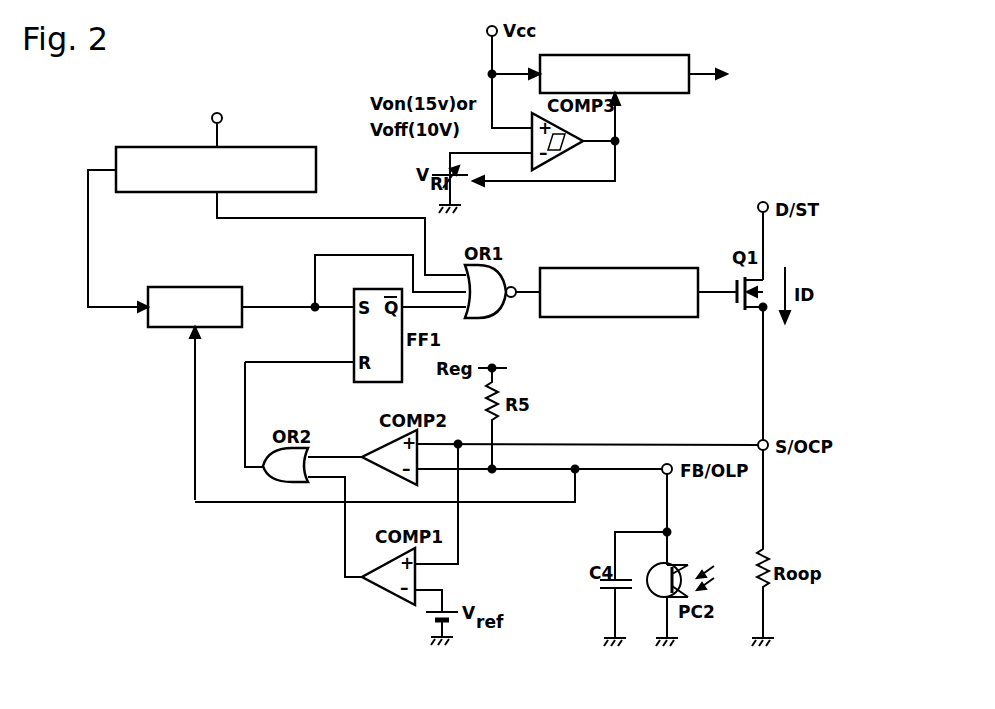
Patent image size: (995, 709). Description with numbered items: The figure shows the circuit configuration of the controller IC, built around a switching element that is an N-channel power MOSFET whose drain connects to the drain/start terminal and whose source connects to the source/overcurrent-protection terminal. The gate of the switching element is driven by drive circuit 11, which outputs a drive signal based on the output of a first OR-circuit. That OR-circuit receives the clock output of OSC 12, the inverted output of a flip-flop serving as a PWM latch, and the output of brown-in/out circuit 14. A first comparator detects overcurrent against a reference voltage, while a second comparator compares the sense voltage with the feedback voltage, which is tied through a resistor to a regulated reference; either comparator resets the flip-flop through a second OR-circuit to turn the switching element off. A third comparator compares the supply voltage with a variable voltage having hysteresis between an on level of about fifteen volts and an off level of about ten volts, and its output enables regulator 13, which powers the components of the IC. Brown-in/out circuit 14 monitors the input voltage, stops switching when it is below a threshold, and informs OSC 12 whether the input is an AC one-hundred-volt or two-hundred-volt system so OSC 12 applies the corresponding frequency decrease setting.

The drive circuit 11 is at (648, 268).
The OSC (internal oscillator) 12 is at (220, 287).
The regulator 13 is at (652, 55).
The brown-in/out circuit 14 is at (264, 147).